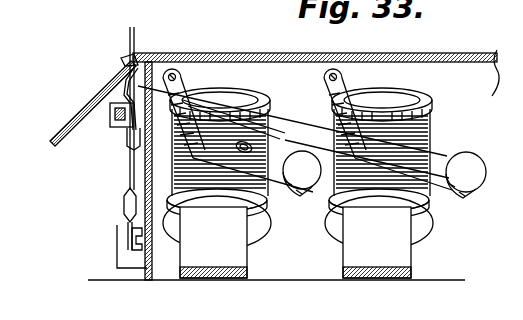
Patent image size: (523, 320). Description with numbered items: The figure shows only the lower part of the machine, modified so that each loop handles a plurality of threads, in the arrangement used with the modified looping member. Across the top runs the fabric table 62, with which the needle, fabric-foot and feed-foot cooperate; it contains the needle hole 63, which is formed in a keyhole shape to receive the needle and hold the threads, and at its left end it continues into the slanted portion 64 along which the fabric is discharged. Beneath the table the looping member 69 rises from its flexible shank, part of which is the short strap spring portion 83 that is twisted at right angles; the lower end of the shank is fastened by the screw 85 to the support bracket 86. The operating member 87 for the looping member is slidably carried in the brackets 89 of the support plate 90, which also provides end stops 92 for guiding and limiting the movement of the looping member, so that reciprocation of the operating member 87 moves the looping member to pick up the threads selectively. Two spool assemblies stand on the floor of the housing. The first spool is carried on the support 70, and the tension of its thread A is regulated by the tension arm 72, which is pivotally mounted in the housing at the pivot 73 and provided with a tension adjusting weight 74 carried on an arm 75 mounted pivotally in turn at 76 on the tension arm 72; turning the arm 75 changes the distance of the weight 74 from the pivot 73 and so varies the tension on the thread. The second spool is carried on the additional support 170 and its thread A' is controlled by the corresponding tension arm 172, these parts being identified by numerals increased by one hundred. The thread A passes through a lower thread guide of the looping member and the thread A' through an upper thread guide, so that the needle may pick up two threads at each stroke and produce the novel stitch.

The fabric table 62 is at (403, 55).
The needle hole 63 is at (125, 56).
The slanted portion 64 is at (59, 121).
The looping member 69 is at (130, 155).
The support 70 is at (213, 242).
The tension arm 72 is at (218, 135).
The pivot 73 is at (175, 70).
The tension adjusting weight 74 is at (302, 188).
The arm 75 is at (248, 151).
The pivot 76 is at (256, 108).
The short strap spring portion 83 is at (124, 201).
The screw 85 is at (132, 243).
The support bracket 86 is at (117, 233).
The operating member 87 is at (126, 140).
The bracket 89 is at (112, 114).
The support plate 90 is at (145, 167).
The end stop 92 is at (118, 88).
The support 170 is at (388, 257).
The tension arm 172 is at (388, 125).
The thread A is at (238, 130).
The thread A' is at (312, 133).